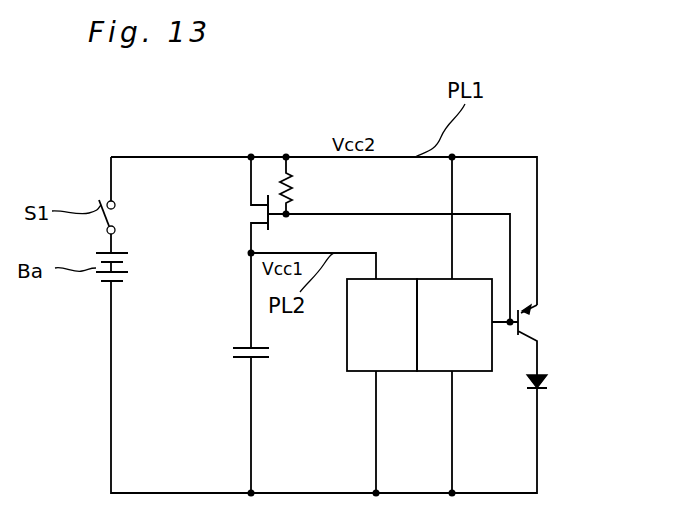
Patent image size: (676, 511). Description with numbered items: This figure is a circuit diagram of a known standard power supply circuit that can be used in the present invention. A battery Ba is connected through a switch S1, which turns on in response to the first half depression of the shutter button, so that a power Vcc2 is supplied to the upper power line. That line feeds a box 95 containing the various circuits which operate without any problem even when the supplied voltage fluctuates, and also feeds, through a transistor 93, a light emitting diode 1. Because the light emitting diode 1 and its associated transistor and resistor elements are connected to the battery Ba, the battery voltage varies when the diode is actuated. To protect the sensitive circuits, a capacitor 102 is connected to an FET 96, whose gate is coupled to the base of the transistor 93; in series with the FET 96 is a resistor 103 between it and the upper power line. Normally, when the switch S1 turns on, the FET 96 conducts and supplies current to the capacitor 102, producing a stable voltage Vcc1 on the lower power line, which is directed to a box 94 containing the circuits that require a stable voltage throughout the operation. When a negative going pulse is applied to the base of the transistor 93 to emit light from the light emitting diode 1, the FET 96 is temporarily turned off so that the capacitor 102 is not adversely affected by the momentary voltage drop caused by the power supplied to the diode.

The resistor 103 is at (290, 178).
The FET 96 is at (275, 230).
The box 94 is at (392, 279).
The box 95 is at (462, 279).
The capacitor 102 is at (262, 357).
The transistor 93 is at (528, 322).
The light emitting diode 1 is at (547, 380).
The switch S1 is at (107, 217).
The battery Ba is at (112, 265).